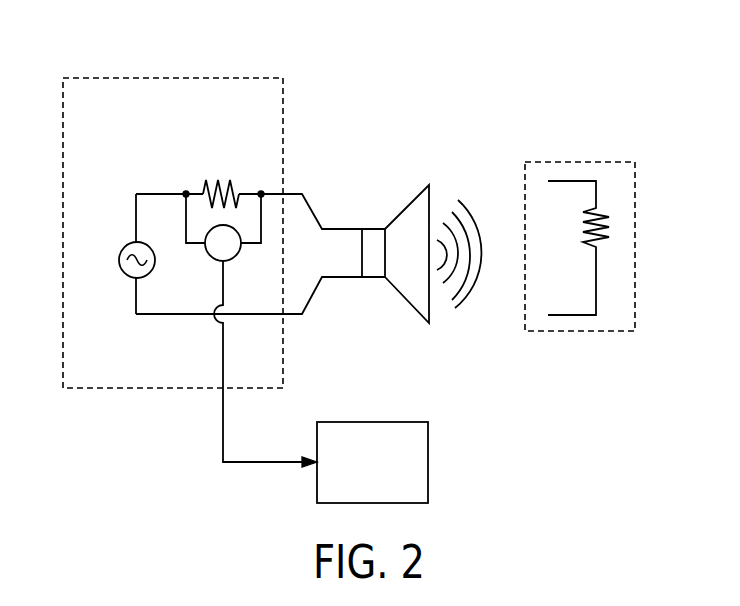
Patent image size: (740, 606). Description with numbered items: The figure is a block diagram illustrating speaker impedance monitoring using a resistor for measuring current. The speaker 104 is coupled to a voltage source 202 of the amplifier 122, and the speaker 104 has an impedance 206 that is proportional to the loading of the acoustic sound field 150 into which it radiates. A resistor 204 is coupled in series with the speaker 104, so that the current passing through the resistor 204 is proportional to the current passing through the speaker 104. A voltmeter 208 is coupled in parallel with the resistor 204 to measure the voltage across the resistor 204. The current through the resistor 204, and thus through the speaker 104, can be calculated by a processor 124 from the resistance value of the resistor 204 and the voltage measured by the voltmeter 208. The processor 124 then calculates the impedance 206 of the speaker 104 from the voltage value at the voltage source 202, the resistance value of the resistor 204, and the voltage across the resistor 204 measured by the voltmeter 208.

The amplifier 122 is at (175, 78).
The voltage source 202 is at (125, 243).
The resistor 204 is at (215, 182).
The voltmeter 208 is at (208, 258).
The processor 124 is at (372, 422).
The speaker 104 is at (401, 213).
The acoustic sound field 150 is at (463, 205).
The impedance 206 is at (581, 161).